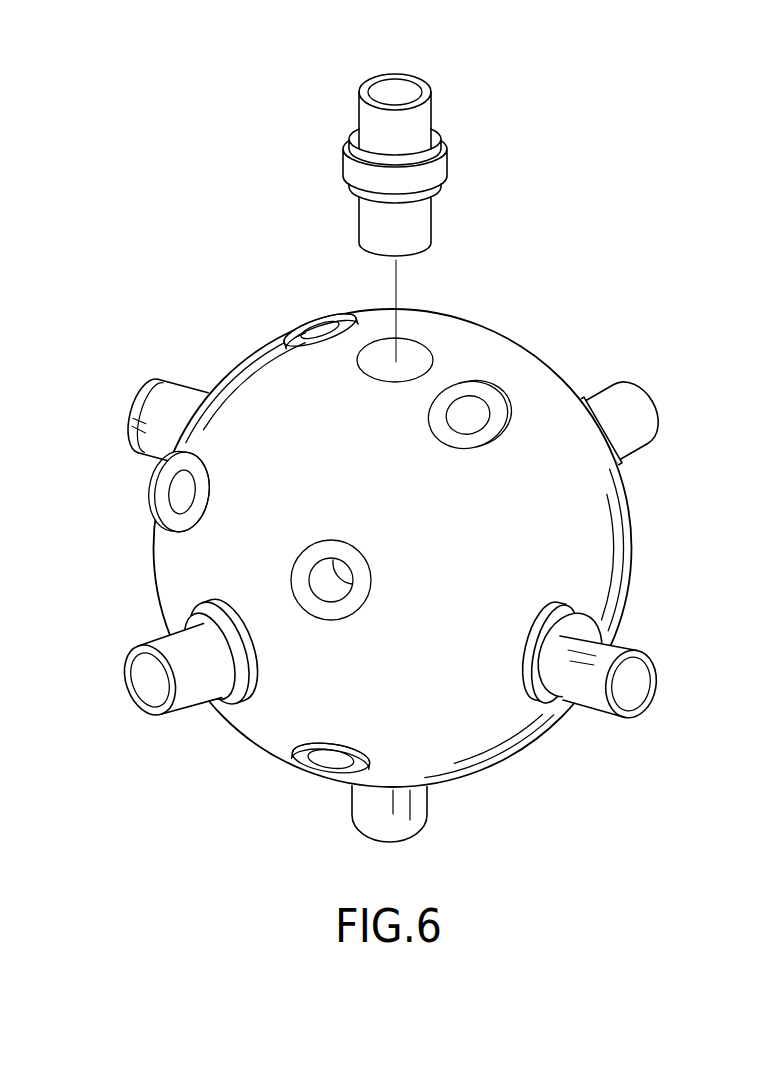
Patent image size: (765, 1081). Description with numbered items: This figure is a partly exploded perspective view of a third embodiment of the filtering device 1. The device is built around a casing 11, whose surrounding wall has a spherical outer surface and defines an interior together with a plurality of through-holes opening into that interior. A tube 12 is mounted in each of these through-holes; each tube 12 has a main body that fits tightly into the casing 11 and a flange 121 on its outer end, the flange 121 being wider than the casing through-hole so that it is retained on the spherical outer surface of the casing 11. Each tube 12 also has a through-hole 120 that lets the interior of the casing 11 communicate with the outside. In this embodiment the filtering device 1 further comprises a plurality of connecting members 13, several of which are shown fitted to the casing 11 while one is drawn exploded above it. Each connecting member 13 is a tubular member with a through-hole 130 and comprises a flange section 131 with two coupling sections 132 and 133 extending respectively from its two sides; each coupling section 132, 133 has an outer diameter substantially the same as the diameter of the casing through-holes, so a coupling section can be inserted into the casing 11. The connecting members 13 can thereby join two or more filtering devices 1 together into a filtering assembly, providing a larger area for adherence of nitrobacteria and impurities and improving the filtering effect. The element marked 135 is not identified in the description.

The filtering device 1 is at (222, 766).
The casing 11 is at (261, 737).
The tube 12 is at (308, 297).
The connecting member 13 is at (152, 358).
The through-hole 120 is at (313, 323).
The flange 121 is at (343, 313).
The through-hole 130 is at (397, 88).
The flange section 131 is at (448, 165).
The coupling section 132 is at (427, 122).
The coupling section 133 is at (417, 238).
The ring of connector 135 is at (437, 146).